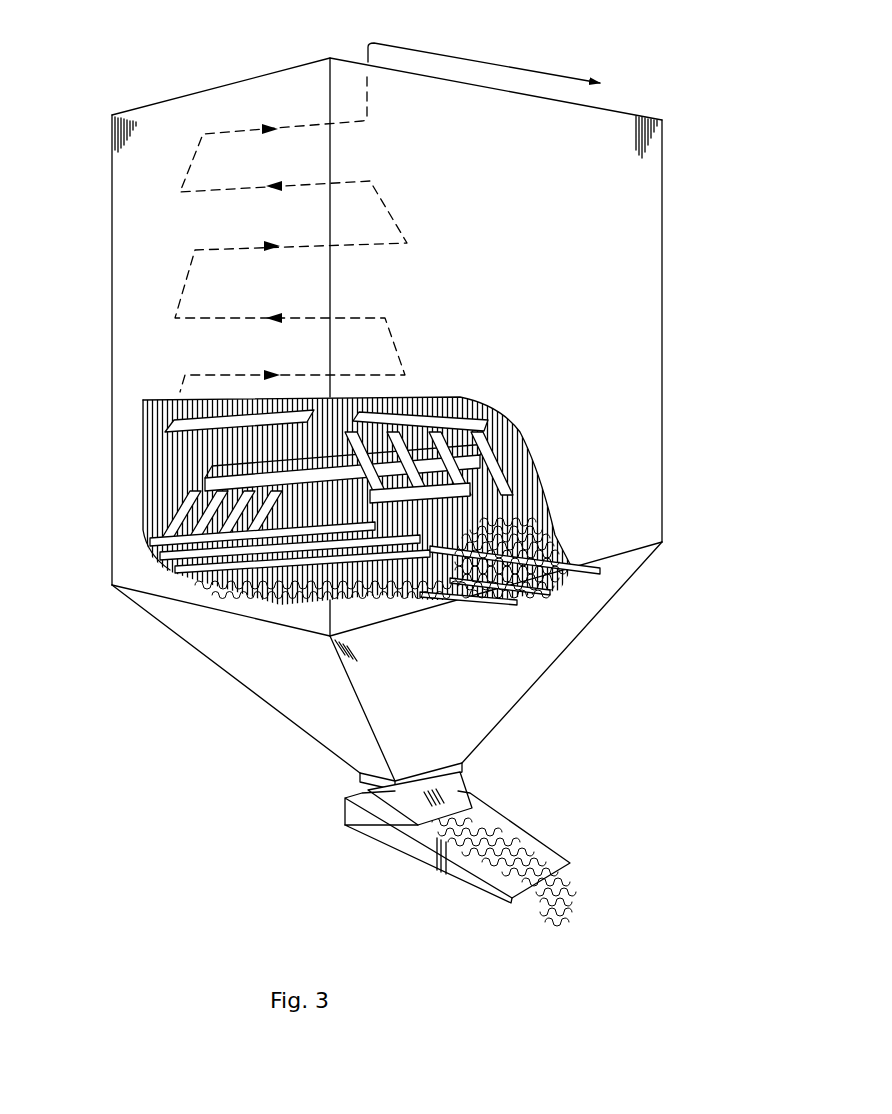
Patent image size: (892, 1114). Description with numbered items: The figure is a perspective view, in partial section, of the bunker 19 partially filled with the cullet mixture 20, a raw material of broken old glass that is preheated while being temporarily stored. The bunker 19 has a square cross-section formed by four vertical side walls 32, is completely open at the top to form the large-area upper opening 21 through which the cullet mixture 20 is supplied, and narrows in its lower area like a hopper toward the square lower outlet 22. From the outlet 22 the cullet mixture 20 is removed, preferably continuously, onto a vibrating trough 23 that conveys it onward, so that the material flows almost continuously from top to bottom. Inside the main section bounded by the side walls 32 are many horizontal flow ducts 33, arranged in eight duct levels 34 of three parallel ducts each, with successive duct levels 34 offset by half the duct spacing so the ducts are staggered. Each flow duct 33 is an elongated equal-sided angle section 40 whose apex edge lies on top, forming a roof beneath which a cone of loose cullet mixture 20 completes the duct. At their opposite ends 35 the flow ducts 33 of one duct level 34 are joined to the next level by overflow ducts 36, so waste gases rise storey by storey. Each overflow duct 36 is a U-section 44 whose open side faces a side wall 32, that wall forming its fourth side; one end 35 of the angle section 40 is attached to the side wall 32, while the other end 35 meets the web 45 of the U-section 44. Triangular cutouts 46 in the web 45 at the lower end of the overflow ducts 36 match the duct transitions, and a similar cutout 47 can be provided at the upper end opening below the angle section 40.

The bunker 19 is at (687, 268).
The cullet mixture 20 is at (420, 582).
The upper opening 21 is at (248, 70).
The lower outlet 22 is at (347, 827).
The vibrating trough 23 is at (427, 850).
The vertical side wall 32 is at (120, 300).
The horizontal flow duct 33 is at (228, 432).
The duct level 34 is at (250, 567).
The end of flow duct 35 is at (165, 426).
The overflow duct 36 is at (150, 536).
The angle section 40 is at (350, 583).
The U-section 44 is at (237, 490).
The web 45 is at (170, 553).
The triangular cutout 46 is at (560, 547).
The cutout 47 is at (388, 428).